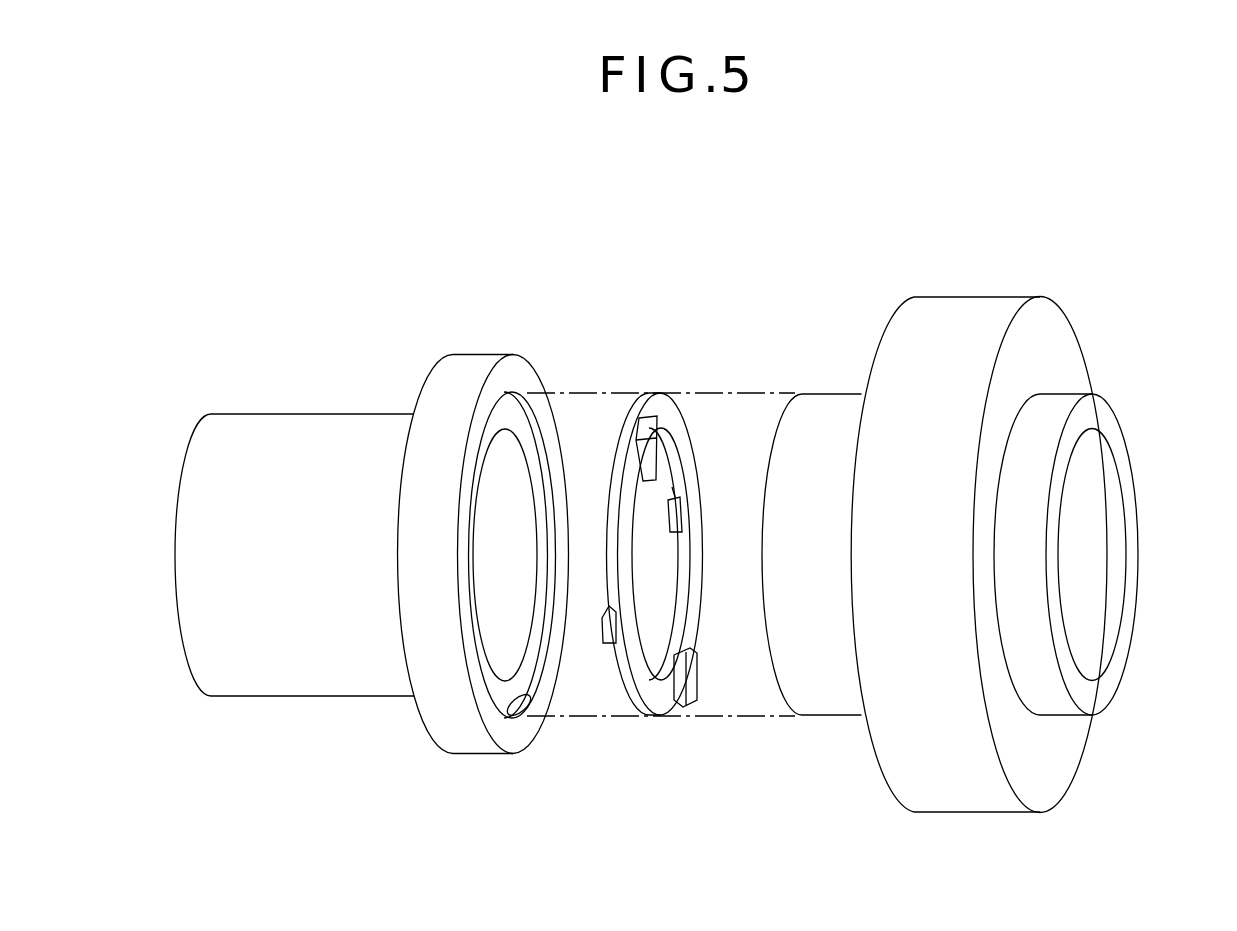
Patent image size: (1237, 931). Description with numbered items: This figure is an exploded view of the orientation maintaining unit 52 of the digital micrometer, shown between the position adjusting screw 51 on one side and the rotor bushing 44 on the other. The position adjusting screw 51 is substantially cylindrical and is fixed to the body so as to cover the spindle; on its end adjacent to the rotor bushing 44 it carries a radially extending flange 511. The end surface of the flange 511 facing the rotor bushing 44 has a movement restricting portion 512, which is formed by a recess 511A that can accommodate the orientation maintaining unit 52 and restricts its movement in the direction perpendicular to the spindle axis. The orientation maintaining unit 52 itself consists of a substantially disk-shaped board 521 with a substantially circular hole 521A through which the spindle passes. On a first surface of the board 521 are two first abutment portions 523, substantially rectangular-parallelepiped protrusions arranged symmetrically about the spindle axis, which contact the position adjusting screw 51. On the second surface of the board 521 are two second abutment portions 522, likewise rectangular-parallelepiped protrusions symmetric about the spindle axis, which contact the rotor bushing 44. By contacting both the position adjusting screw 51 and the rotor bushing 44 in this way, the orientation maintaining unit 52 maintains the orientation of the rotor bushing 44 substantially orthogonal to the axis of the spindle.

The rotor bushing 44 is at (972, 297).
The position adjusting screw 51 is at (332, 413).
The flange 511 is at (473, 743).
The recess 511A is at (549, 586).
The movement restricting portion 512 is at (514, 702).
The orientation maintaining unit 52 is at (671, 525).
The board 521 is at (672, 395).
The circular hole 521A is at (681, 461).
The second abutment portions 522 is at (650, 405).
The first abutment portions 523 is at (676, 532).